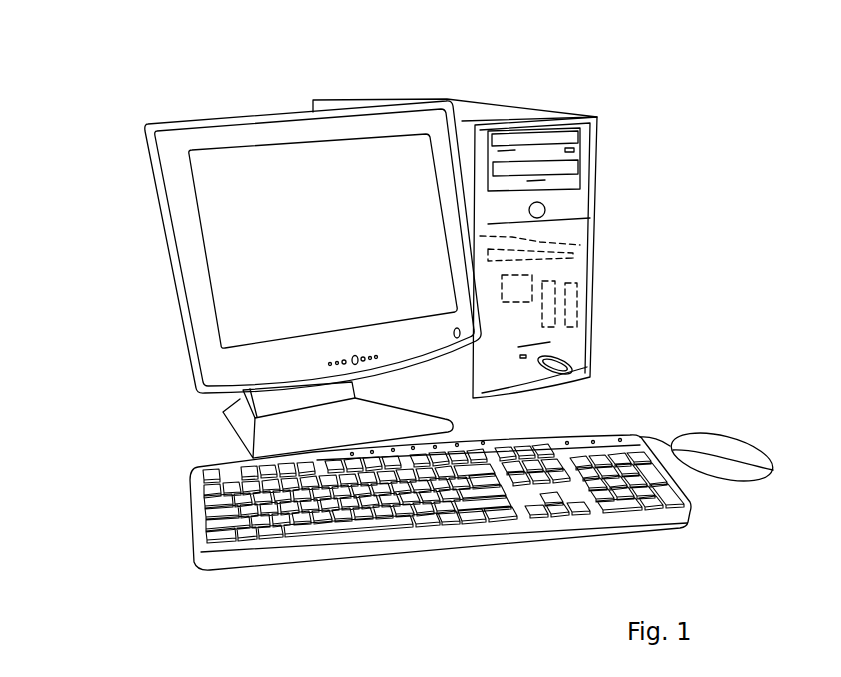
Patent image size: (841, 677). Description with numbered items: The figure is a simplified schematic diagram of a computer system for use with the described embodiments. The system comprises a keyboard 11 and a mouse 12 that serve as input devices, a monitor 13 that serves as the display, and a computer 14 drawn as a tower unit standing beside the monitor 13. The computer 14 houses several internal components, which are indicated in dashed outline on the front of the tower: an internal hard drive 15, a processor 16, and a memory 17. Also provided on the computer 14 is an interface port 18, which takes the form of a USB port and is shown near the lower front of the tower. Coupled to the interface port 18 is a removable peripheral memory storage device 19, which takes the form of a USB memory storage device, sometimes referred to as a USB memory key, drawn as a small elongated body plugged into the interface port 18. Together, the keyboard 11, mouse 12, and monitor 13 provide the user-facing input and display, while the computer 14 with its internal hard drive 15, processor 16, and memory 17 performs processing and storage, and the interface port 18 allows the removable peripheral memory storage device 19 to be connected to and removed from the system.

The keyboard 11 is at (275, 563).
The mouse 12 is at (770, 475).
The monitor 13 is at (160, 188).
The computer 14 is at (470, 108).
The internal hard drive 15 is at (582, 248).
The processor 16 is at (560, 272).
The memory 17 is at (575, 297).
The interface port 18 is at (522, 356).
The removable peripheral memory storage device 19 is at (571, 366).